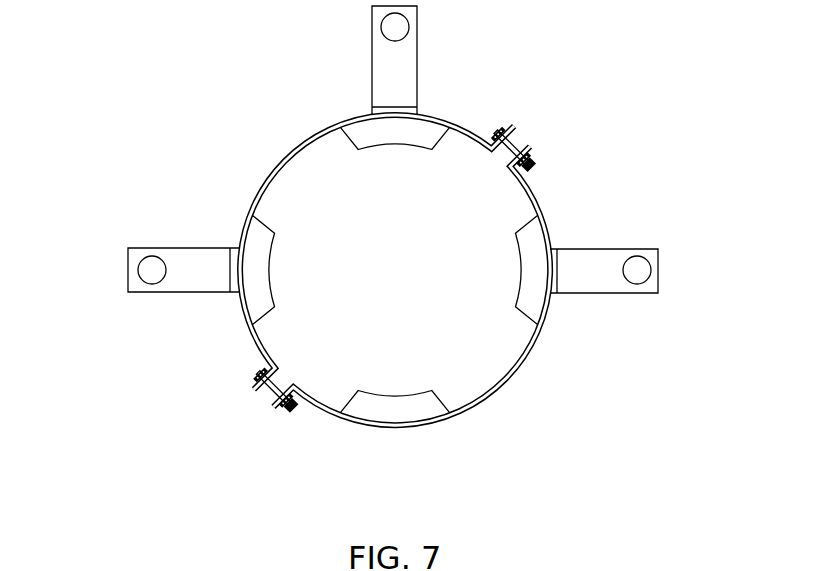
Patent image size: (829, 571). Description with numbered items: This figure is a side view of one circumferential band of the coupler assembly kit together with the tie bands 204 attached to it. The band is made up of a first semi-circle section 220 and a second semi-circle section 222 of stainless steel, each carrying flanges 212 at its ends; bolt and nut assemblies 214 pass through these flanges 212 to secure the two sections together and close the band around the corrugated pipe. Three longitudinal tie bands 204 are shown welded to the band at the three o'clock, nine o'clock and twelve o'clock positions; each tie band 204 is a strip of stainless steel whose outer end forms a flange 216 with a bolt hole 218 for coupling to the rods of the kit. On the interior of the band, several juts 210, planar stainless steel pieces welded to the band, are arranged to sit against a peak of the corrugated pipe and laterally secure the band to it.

The longitudinal tie band 204 is at (393, 231).
The jut 210 is at (515, 278).
The flange 212 is at (514, 126).
The bolt and nut assembly 214 is at (537, 168).
The flange 216 is at (388, 149).
The bolt hole 218 is at (406, 37).
The first semi-circle section 220 is at (356, 252).
The second semi-circle section 222 is at (425, 286).